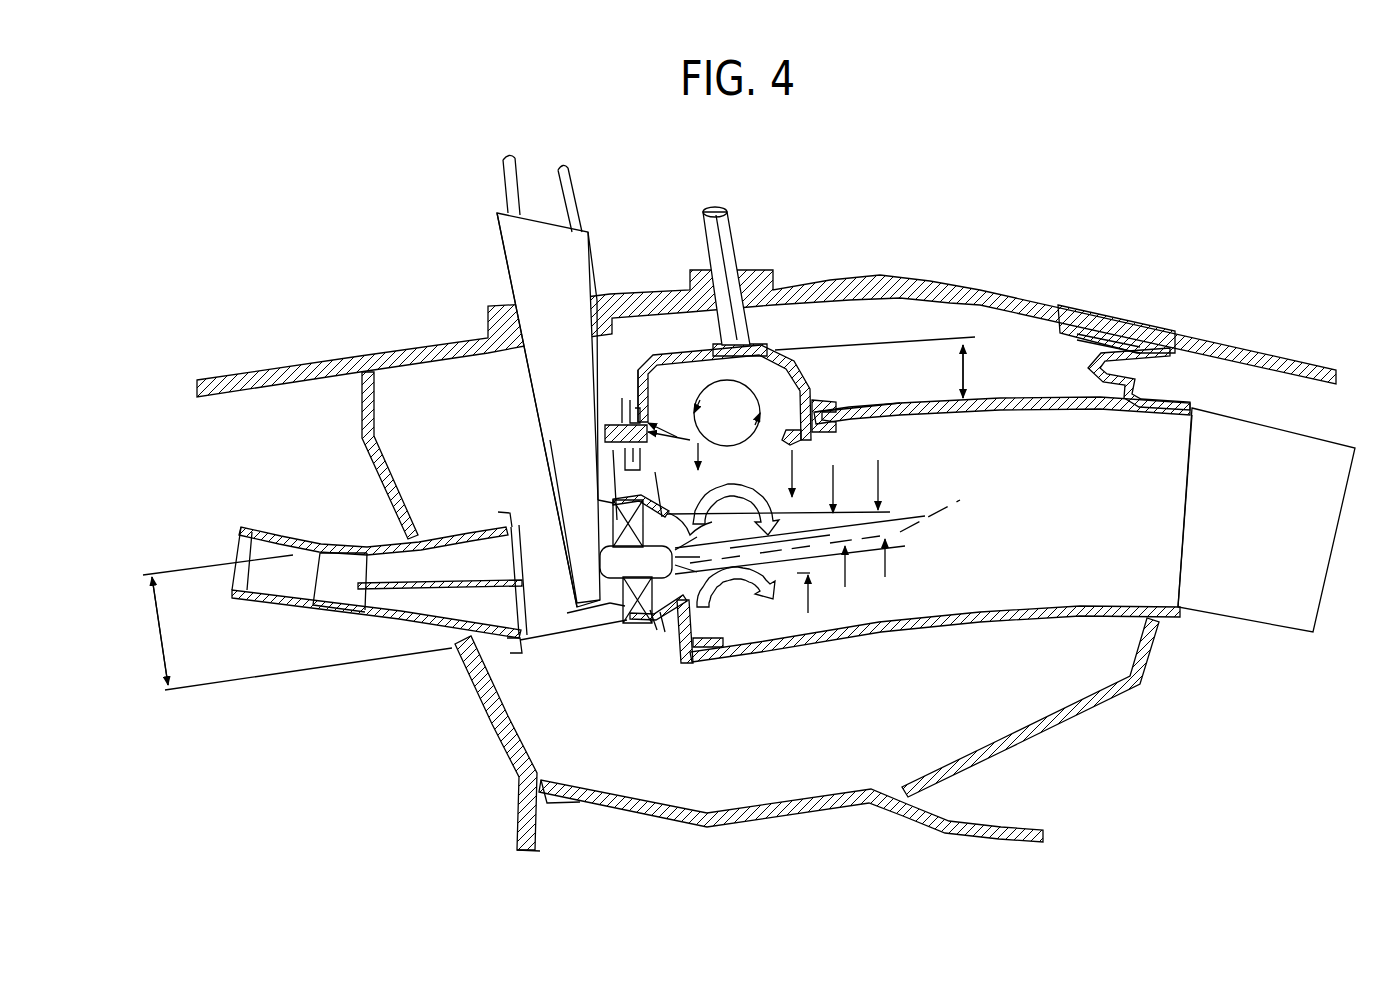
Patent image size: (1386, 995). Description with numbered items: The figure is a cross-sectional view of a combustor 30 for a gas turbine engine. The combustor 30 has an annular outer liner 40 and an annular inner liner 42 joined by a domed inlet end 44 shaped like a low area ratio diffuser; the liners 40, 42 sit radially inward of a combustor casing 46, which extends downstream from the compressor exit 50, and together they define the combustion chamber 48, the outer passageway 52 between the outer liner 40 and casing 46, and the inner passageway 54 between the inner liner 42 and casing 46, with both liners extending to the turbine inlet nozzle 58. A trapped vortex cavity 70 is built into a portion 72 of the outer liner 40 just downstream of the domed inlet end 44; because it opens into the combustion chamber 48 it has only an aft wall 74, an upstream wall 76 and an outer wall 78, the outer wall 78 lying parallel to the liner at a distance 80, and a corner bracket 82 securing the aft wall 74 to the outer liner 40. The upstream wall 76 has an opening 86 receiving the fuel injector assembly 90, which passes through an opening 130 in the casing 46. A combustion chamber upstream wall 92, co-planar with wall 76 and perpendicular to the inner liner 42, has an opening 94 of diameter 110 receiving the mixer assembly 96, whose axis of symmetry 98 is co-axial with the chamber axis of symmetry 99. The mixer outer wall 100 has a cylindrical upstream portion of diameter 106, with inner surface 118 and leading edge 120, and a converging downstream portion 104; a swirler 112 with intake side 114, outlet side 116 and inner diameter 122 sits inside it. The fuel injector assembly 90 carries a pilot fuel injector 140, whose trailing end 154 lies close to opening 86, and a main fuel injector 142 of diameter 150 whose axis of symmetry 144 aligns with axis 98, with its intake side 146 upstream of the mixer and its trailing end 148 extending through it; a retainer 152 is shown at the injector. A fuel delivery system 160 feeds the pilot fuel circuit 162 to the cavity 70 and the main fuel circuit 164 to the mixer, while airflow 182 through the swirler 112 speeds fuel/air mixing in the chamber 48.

The combustor 30 is at (293, 212).
The outer liner 40 is at (1000, 400).
The inner liner 42 is at (1035, 622).
The domed inlet end 44 is at (522, 627).
The combustor casing 46 is at (902, 255).
The combustion chamber 48 is at (1070, 536).
The compressor exit 50 is at (290, 588).
The outer passageway 52 is at (915, 384).
The inner passageway 54 is at (948, 690).
The turbine inlet nozzle 58 is at (1253, 556).
The trapped vortex cavity 70 is at (775, 350).
The portion of outer liner 72 is at (815, 382).
The aft wall 74 is at (760, 397).
The upstream wall 76 is at (620, 378).
The outer wall 78 is at (682, 308).
The distance 80 is at (975, 352).
The corner bracket 82 is at (820, 440).
The opening 86 is at (690, 440).
The fuel injector assembly 90 is at (535, 372).
The combustion chamber upstream wall 92 is at (668, 612).
The opening 94 is at (680, 586).
The mixer assembly 96 is at (600, 625).
The mixer assembly axis of symmetry 98 is at (572, 534).
The axis of symmetry 99 is at (960, 500).
The outer wall 100 is at (648, 625).
The downstream portion 104 is at (690, 500).
The diameter 106 is at (172, 632).
The diameter 110 is at (812, 605).
The swirler 112 is at (620, 614).
The intake side 114 is at (600, 505).
The outlet side 116 is at (667, 635).
The inner surface 118 is at (608, 498).
The leading edge 120 is at (598, 490).
The inner diameter 122 is at (848, 578).
The opening 130 is at (596, 356).
The pilot fuel injector 140 is at (604, 430).
The main fuel injector 142 is at (592, 597).
The main fuel injector axis of symmetry 144 is at (605, 606).
The intake side 146 is at (600, 558).
The trailing end 148 is at (705, 587).
The diameter 150 is at (888, 567).
The retainer 152 is at (622, 408).
The trailing end 154 is at (727, 413).
The fuel delivery system 160 is at (488, 257).
The pilot fuel circuit 162 is at (572, 172).
The main fuel circuit 164 is at (500, 165).
The airflow 182 is at (793, 643).